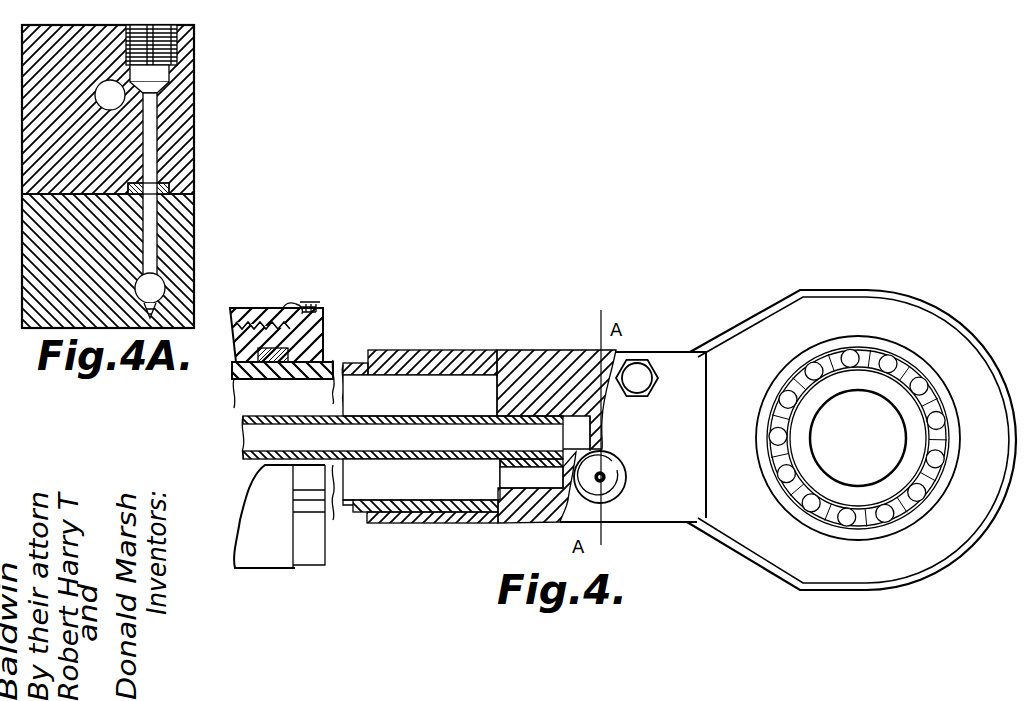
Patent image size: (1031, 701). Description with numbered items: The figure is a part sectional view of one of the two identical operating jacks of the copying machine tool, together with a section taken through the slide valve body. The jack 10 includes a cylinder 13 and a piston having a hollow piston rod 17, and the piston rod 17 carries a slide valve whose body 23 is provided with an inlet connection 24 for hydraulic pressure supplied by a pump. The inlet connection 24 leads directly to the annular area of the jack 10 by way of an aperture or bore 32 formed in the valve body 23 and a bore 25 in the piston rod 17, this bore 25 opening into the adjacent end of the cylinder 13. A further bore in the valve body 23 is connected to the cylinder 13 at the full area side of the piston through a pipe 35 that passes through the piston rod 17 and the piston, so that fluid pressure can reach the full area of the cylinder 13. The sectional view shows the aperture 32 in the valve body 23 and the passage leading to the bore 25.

In FIG. 4, the jack 10 is at (270, 570).
In FIG. 4, the cylinder 13 is at (269, 308).
In FIG. 4, the hollow piston rod 17 is at (348, 362).
In FIG. 4A, the valve body 23 is at (177, 97).
In FIG. 4, the valve body 23 is at (680, 492).
In FIG. 4, the inlet connection 24 is at (607, 493).
In FIG. 4, the bore 25 is at (432, 385).
In FIG. 4A, the aperture 32 is at (153, 293).
In FIG. 4, the aperture 32 is at (542, 482).
In FIG. 4, the pipe 35 is at (443, 433).